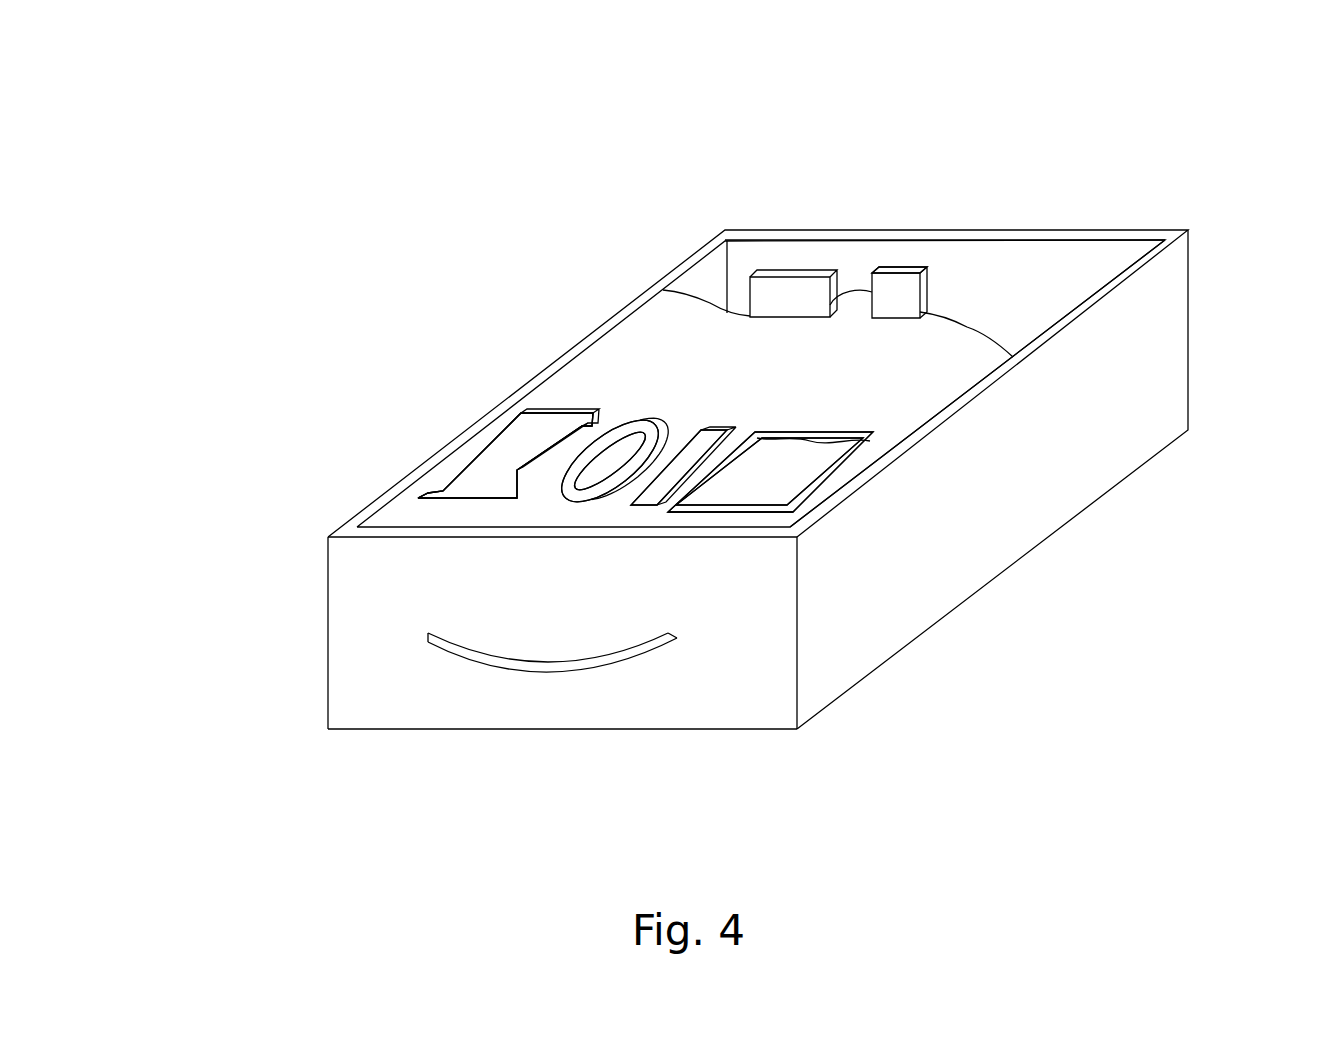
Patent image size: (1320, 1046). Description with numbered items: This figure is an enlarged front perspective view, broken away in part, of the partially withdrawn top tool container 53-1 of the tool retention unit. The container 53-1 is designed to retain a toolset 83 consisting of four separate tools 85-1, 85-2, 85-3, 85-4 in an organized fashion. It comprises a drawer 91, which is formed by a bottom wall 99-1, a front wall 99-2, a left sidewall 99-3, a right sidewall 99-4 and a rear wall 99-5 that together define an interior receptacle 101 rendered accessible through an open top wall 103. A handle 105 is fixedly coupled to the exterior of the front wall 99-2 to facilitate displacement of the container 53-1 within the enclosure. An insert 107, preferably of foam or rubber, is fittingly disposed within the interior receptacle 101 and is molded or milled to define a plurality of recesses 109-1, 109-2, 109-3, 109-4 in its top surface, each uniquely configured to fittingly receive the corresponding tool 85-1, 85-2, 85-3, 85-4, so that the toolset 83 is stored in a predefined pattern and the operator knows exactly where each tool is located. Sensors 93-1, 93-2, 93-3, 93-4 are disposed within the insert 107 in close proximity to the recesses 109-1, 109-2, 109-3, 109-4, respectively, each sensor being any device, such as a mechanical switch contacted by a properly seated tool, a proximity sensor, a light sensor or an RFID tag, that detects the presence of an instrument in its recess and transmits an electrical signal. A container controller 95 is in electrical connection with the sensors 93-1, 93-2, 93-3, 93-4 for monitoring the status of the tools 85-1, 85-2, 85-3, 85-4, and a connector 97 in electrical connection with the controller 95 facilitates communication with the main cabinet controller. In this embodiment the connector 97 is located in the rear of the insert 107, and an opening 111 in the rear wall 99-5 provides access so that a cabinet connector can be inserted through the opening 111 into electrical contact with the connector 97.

The tool container 53-1 is at (736, 446).
The toolset 83 is at (677, 446).
The tool 85-1 is at (413, 463).
The tool 85-2 is at (580, 483).
The tool 85-3 is at (763, 515).
The tool 85-4 is at (789, 479).
The drawer 91 is at (1113, 233).
The sensor 93-1 is at (547, 410).
The sensor 93-2 is at (640, 413).
The sensor 93-3 is at (705, 430).
The sensor 93-4 is at (817, 437).
The container controller 95 is at (781, 268).
The connector 97 is at (902, 268).
The bottom wall 99-1 is at (400, 732).
The front wall 99-2 is at (352, 702).
The left sidewall 99-3 is at (709, 290).
The right sidewall 99-4 is at (1135, 440).
The rear wall 99-5 is at (975, 263).
The interior receptacle 101 is at (1042, 270).
The open top wall 103 is at (1133, 273).
The handle 105 is at (552, 665).
The insert 107 is at (657, 317).
The recess 109-1 is at (510, 457).
The recess 109-2 is at (617, 417).
The recess 109-3 is at (637, 500).
The recess 109-4 is at (860, 424).
The opening 111 is at (882, 265).